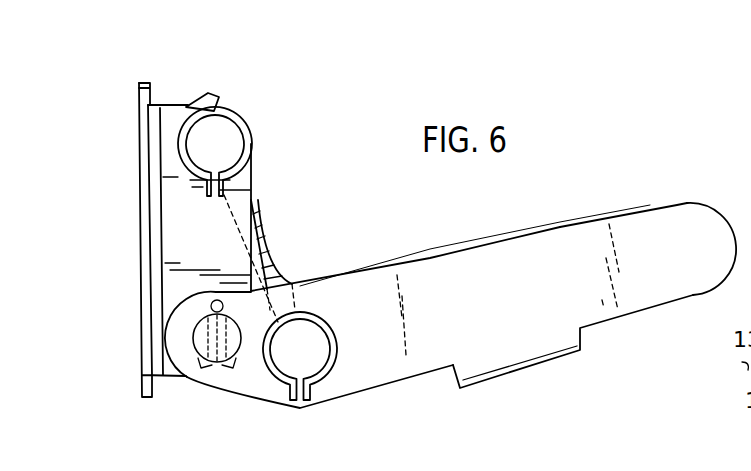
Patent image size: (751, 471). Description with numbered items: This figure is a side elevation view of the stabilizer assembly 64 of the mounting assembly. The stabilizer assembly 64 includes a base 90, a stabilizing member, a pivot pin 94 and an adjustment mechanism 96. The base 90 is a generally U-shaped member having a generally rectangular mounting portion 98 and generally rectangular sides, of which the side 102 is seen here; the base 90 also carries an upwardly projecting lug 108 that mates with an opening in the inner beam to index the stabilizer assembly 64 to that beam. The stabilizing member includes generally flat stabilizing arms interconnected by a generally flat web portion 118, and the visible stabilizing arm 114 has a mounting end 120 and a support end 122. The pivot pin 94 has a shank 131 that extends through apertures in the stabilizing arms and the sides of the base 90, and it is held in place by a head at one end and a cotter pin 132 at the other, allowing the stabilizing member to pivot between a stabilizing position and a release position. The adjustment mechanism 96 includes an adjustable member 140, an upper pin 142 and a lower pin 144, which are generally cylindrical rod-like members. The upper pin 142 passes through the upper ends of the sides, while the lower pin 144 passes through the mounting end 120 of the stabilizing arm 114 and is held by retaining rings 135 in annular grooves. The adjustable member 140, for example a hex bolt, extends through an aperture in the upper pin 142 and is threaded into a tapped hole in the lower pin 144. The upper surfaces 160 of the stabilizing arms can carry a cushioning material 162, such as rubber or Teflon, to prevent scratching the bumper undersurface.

The right stabilizer assembly 64 is at (448, 449).
The base 90 is at (176, 105).
The pivot pin 94 is at (200, 347).
The adjustment mechanism 96 is at (270, 253).
The mounting portion 98 is at (141, 130).
The side 102 is at (183, 205).
The upwardly projecting lug 108 is at (138, 95).
The stabilizing arm 114 is at (500, 257).
The web portion 118 is at (580, 355).
The mounting end 120 is at (242, 382).
The support end 122 is at (695, 205).
The shank 131 is at (725, 377).
The cotter pin 132 is at (193, 299).
The retaining rings 135 is at (330, 367).
The adjustable member 140 is at (255, 224).
The upper pin 142 is at (220, 134).
The lower pin 144 is at (312, 338).
The upper surfaces 160 is at (642, 205).
The cushioning material 162 is at (598, 222).